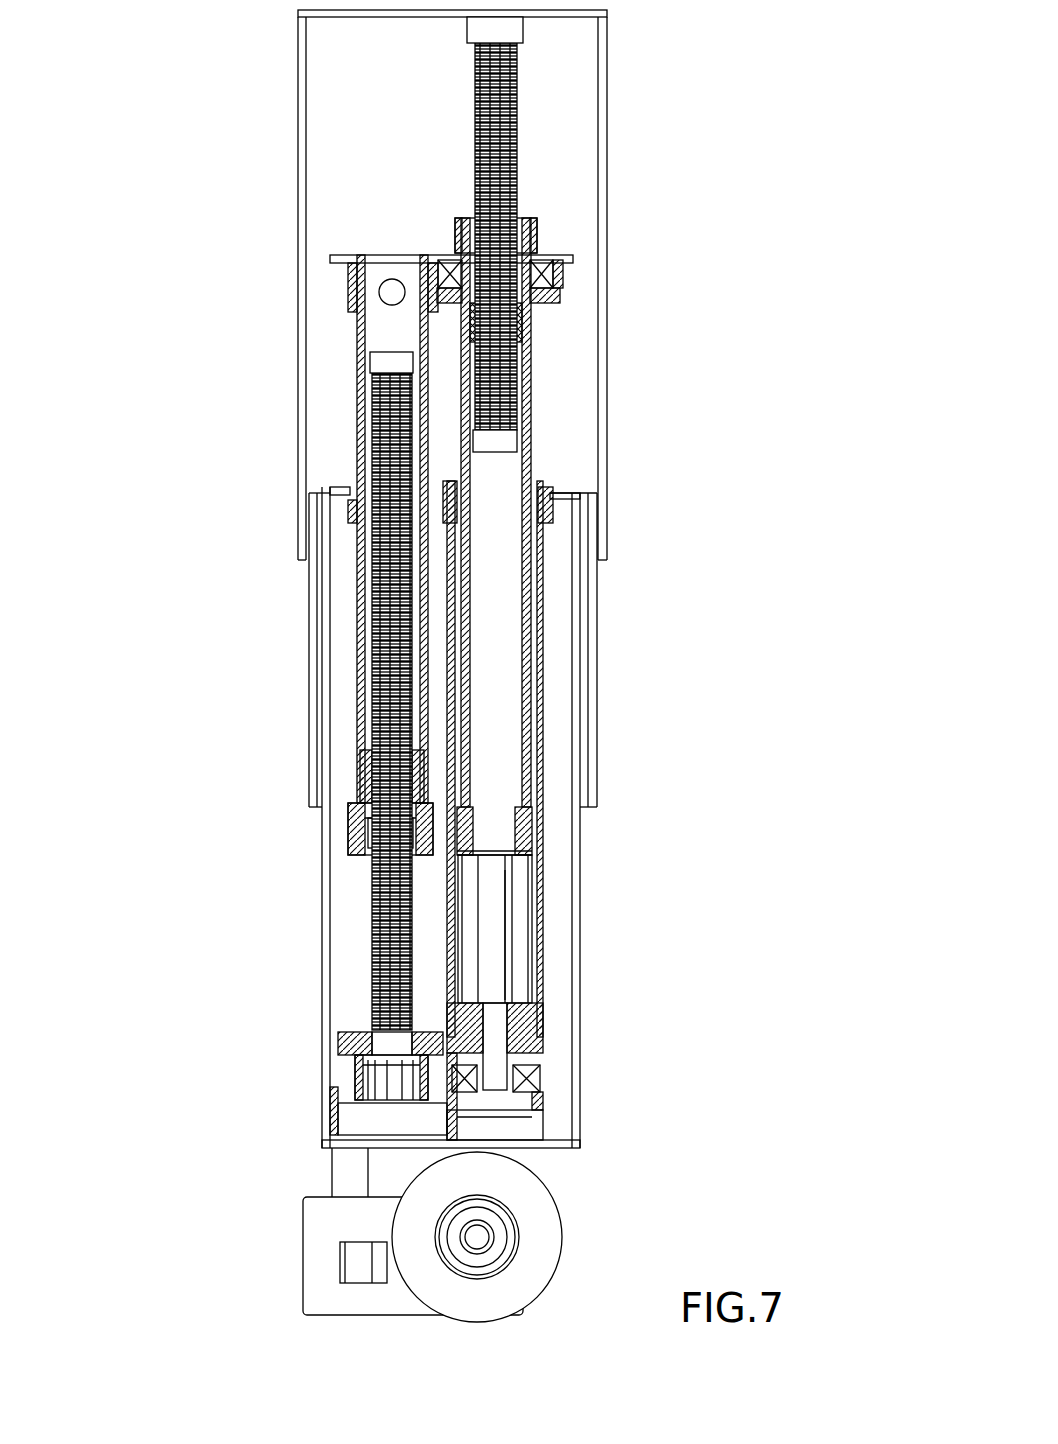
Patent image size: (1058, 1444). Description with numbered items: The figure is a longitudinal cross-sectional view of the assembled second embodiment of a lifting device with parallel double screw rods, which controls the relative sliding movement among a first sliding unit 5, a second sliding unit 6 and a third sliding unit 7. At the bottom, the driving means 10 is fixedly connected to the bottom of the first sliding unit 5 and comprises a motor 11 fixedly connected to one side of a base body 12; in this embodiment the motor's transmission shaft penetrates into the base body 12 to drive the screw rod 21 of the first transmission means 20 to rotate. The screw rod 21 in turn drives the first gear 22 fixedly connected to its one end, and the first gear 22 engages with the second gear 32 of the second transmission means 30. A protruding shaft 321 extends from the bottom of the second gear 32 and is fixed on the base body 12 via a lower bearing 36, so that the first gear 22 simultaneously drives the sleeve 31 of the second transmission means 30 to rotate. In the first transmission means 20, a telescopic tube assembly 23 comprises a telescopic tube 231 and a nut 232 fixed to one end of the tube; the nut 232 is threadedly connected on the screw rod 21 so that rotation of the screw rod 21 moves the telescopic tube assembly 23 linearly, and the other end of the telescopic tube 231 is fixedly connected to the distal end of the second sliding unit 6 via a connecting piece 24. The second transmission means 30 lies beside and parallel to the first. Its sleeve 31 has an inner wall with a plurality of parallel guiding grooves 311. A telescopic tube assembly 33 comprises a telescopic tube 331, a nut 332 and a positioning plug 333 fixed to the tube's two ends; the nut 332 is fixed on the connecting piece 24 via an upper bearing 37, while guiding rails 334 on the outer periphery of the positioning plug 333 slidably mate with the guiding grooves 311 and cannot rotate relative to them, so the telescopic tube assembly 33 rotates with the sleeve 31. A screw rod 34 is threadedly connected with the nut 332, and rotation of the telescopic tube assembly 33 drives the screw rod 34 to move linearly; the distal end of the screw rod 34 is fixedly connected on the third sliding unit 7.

The third sliding unit 7 is at (303, 157).
The screw rod 34 is at (517, 132).
The connecting piece 24 is at (345, 262).
The upper bearing 37 is at (540, 262).
The nut 332 is at (526, 324).
The telescopic tube assembly 33 is at (540, 404).
The telescopic tube 331 is at (530, 438).
The second sliding unit 6 is at (313, 578).
The first transmission means 20 is at (312, 695).
The second transmission means 30 is at (562, 686).
The telescopic tube assembly 23 is at (307, 555).
The telescopic tube 231 is at (348, 682).
The nut 232 is at (350, 805).
The positioning plug 333 is at (530, 817).
The guiding rails 334 is at (530, 843).
The first sliding unit 5 is at (326, 910).
The screw rod 21 is at (373, 937).
The sleeve 31 is at (543, 868).
The guiding grooves 311 is at (528, 955).
The first gear 22 is at (348, 1040).
The second gear 32 is at (548, 1040).
The lower bearing 36 is at (535, 1078).
The protruding shaft 321 is at (495, 1073).
The base body 12 is at (317, 1248).
The driving means 10 is at (422, 1240).
The motor 11 is at (550, 1228).